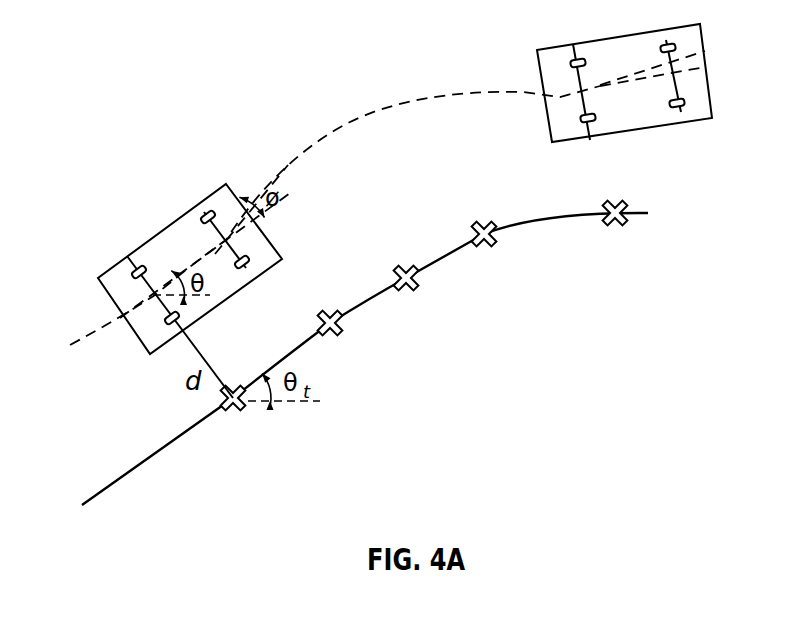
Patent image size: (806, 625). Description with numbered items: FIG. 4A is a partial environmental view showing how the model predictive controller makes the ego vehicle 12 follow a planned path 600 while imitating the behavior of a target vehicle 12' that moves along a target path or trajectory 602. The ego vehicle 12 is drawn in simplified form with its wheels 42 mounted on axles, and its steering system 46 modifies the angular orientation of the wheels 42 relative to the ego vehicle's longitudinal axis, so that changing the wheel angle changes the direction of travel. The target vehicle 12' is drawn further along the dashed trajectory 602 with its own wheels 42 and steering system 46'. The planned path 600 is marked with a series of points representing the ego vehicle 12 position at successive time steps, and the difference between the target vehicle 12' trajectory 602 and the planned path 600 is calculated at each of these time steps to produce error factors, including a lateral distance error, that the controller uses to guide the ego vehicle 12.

The ego vehicle 12 is at (206, 291).
The target vehicle 12' is at (652, 91).
The wheels 42 is at (202, 210).
The steering system 46 is at (283, 223).
The steering system 46' is at (723, 72).
The planned path 600 is at (112, 487).
The target path or trajectory 602 is at (420, 101).